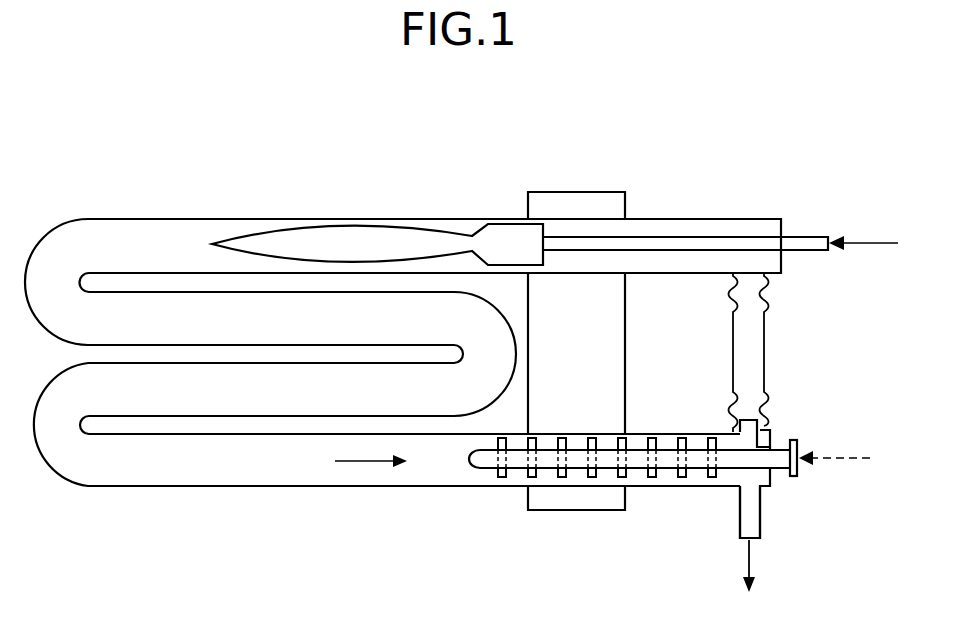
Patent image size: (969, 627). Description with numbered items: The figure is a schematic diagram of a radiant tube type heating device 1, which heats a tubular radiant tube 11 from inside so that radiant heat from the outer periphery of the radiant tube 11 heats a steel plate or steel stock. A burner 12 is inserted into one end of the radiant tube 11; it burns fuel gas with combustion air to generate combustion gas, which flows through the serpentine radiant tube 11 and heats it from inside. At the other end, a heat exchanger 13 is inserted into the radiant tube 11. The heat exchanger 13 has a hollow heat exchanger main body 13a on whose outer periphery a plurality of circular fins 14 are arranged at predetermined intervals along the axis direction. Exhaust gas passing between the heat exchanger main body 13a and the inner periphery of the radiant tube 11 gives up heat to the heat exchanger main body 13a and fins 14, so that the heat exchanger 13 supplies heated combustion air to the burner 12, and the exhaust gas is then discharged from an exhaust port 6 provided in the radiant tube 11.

The radiant tube type heating device 1 is at (697, 178).
The radiant tube 11 is at (122, 218).
The burner 12 is at (501, 218).
The heat exchanger 13 is at (475, 469).
The heat exchanger main body 13a is at (638, 479).
The fins 14 is at (502, 480).
The exhaust port 6 is at (745, 541).